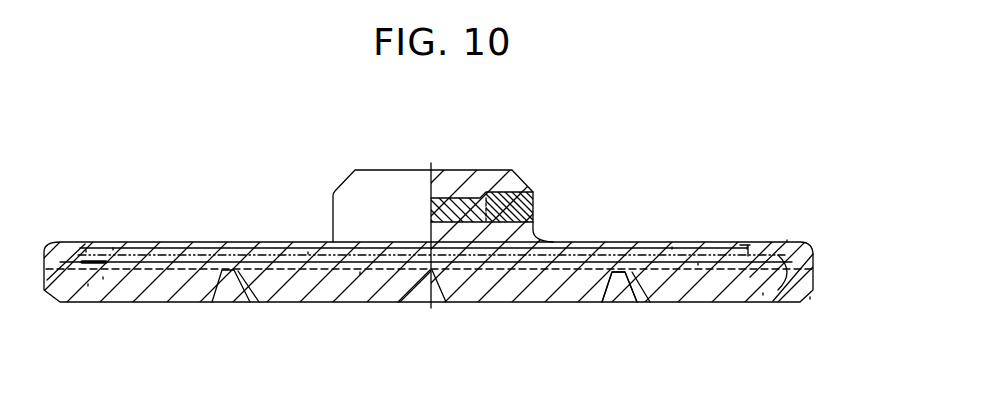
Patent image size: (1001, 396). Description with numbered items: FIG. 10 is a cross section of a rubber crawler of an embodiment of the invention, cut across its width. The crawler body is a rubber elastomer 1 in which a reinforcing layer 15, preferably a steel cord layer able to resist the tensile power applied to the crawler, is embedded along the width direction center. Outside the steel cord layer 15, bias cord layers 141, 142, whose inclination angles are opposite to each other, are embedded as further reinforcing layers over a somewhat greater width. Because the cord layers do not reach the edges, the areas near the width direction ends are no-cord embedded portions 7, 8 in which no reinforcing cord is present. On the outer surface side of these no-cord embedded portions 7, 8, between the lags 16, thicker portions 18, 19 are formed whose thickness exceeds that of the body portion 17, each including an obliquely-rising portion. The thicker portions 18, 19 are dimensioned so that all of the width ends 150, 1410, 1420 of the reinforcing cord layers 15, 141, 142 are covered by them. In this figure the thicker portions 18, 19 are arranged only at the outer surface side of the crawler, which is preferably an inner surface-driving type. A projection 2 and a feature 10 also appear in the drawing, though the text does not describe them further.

The rubber elastomer 1 is at (578, 243).
The projection 2 is at (368, 180).
The no-cord embedded portion 7 is at (55, 244).
The no-cord embedded portion 8 is at (757, 240).
The insert cavity 10 is at (520, 184).
The reinforcing layer 15 is at (672, 247).
The lags 16 is at (592, 302).
The body portion 17 is at (360, 272).
The thicker portion 18 is at (103, 277).
The thicker portion 19 is at (763, 293).
The bias cord layer 141 is at (308, 252).
The bias cord layer 142 is at (698, 263).
The width end of steel cord layer 150 is at (113, 248).
The width end of bias cord layer 1410 is at (833, 193).
The width end of bias cord layer 1420 is at (833, 313).